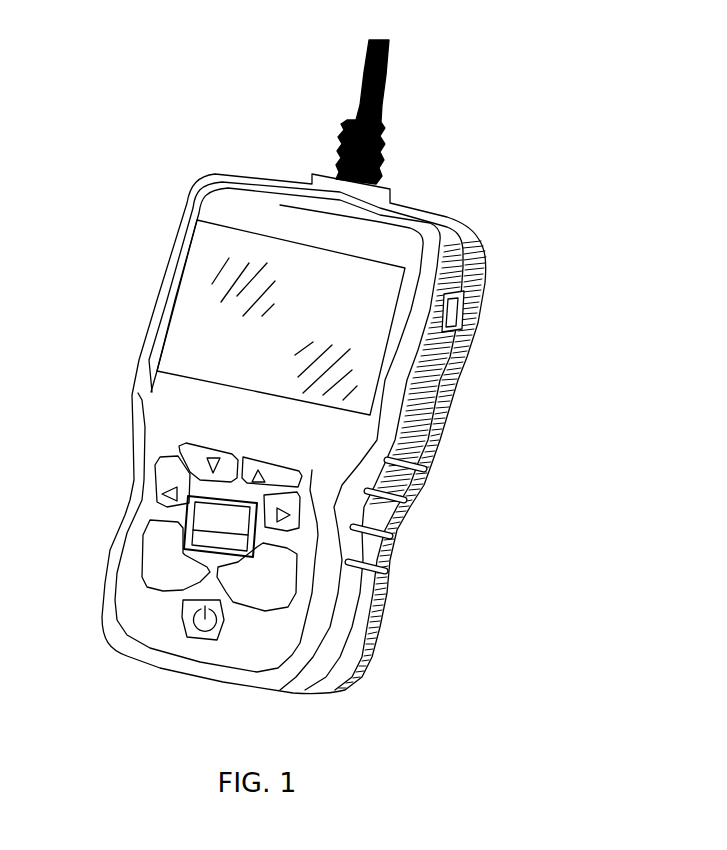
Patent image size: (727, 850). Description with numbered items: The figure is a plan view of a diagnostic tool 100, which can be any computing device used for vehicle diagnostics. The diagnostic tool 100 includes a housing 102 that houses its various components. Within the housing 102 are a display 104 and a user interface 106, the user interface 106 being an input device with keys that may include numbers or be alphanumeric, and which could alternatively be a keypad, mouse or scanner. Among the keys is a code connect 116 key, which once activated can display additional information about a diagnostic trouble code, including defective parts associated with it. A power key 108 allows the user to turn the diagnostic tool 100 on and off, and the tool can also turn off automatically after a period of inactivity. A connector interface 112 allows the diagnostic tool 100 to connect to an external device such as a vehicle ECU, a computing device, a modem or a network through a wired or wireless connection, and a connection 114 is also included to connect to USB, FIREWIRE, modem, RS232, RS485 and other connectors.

The diagnostic tool 100 is at (503, 202).
The housing 102 is at (437, 418).
The display 104 is at (203, 292).
The user interface 106 is at (157, 550).
The power key 108 is at (190, 620).
The connector interface 112 is at (380, 183).
The connection 114 is at (460, 306).
The code connect key 116 is at (238, 522).